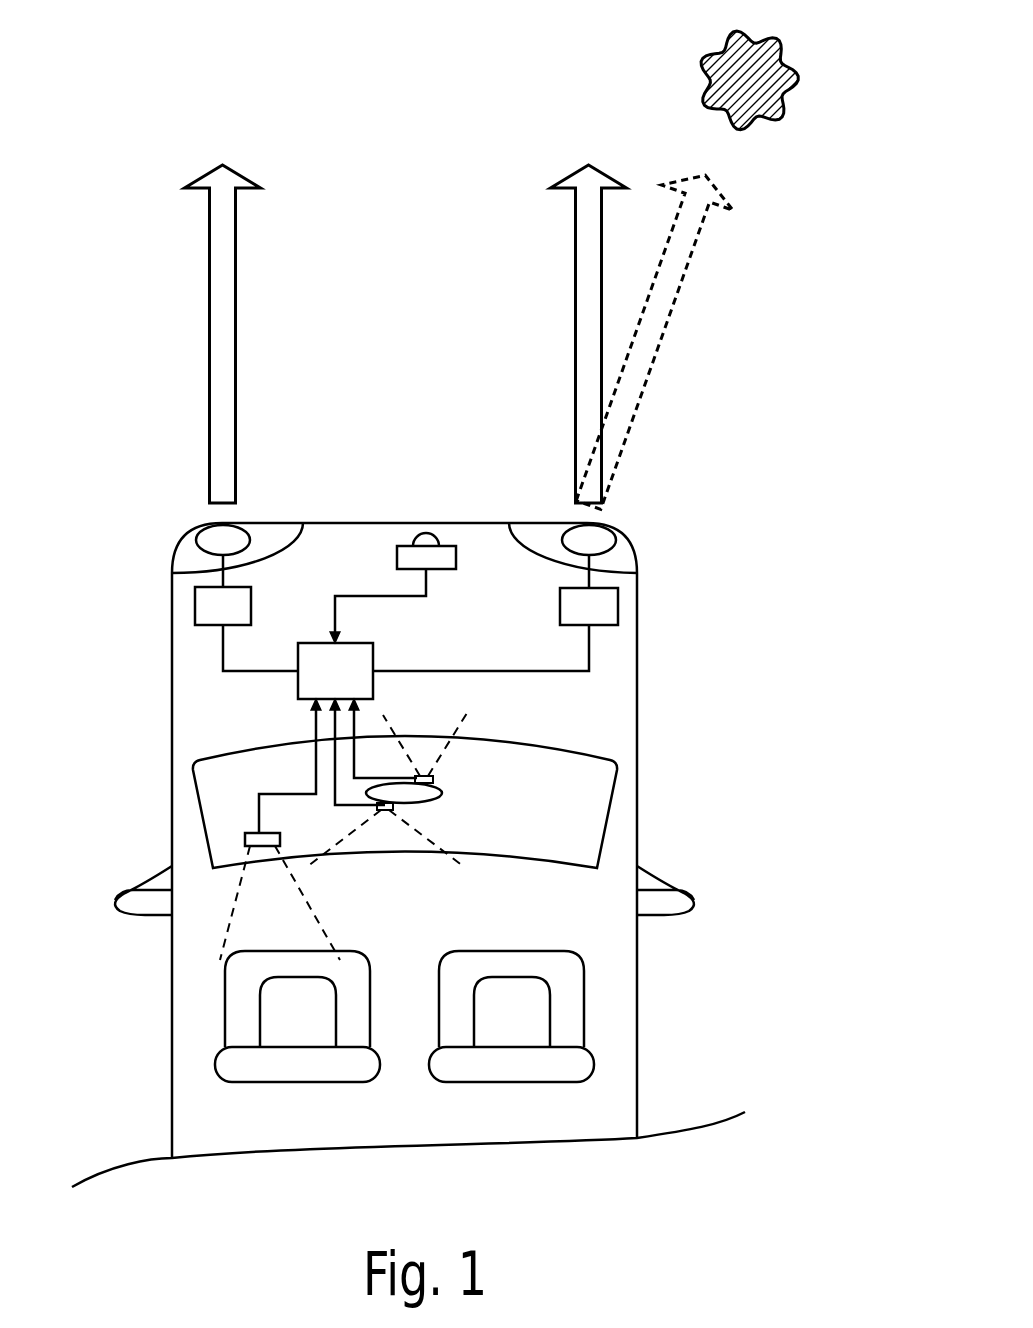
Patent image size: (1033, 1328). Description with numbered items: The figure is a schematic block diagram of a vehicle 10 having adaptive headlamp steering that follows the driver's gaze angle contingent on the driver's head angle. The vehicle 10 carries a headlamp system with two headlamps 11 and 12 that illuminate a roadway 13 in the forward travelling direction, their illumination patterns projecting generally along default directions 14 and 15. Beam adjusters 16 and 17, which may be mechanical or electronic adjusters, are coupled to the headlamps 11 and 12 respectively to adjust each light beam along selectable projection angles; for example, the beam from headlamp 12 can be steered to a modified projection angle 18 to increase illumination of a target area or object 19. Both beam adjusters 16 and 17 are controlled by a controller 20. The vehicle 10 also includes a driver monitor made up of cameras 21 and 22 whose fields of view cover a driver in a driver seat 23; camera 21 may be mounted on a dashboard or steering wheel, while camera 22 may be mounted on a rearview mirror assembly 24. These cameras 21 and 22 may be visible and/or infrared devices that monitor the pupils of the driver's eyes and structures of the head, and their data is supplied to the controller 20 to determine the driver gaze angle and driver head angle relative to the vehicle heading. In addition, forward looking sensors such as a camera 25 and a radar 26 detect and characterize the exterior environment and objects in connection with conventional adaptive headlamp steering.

The vehicle 10 is at (637, 1022).
The headlamp 11 is at (197, 541).
The headlamp 12 is at (618, 540).
The roadway 13 is at (393, 270).
The default direction 14 is at (209, 332).
The default direction 15 is at (575, 315).
The beam adjuster 16 is at (195, 607).
The beam adjuster 17 is at (618, 616).
The modified projection angle 18 is at (678, 289).
The target area 19 is at (703, 78).
The controller 20 is at (298, 685).
The camera 21 is at (245, 840).
The camera 22 is at (393, 806).
The driver seat 23 is at (225, 1017).
The rearview mirror assembly 24 is at (442, 790).
The camera 25 is at (433, 780).
The radar 26 is at (456, 557).